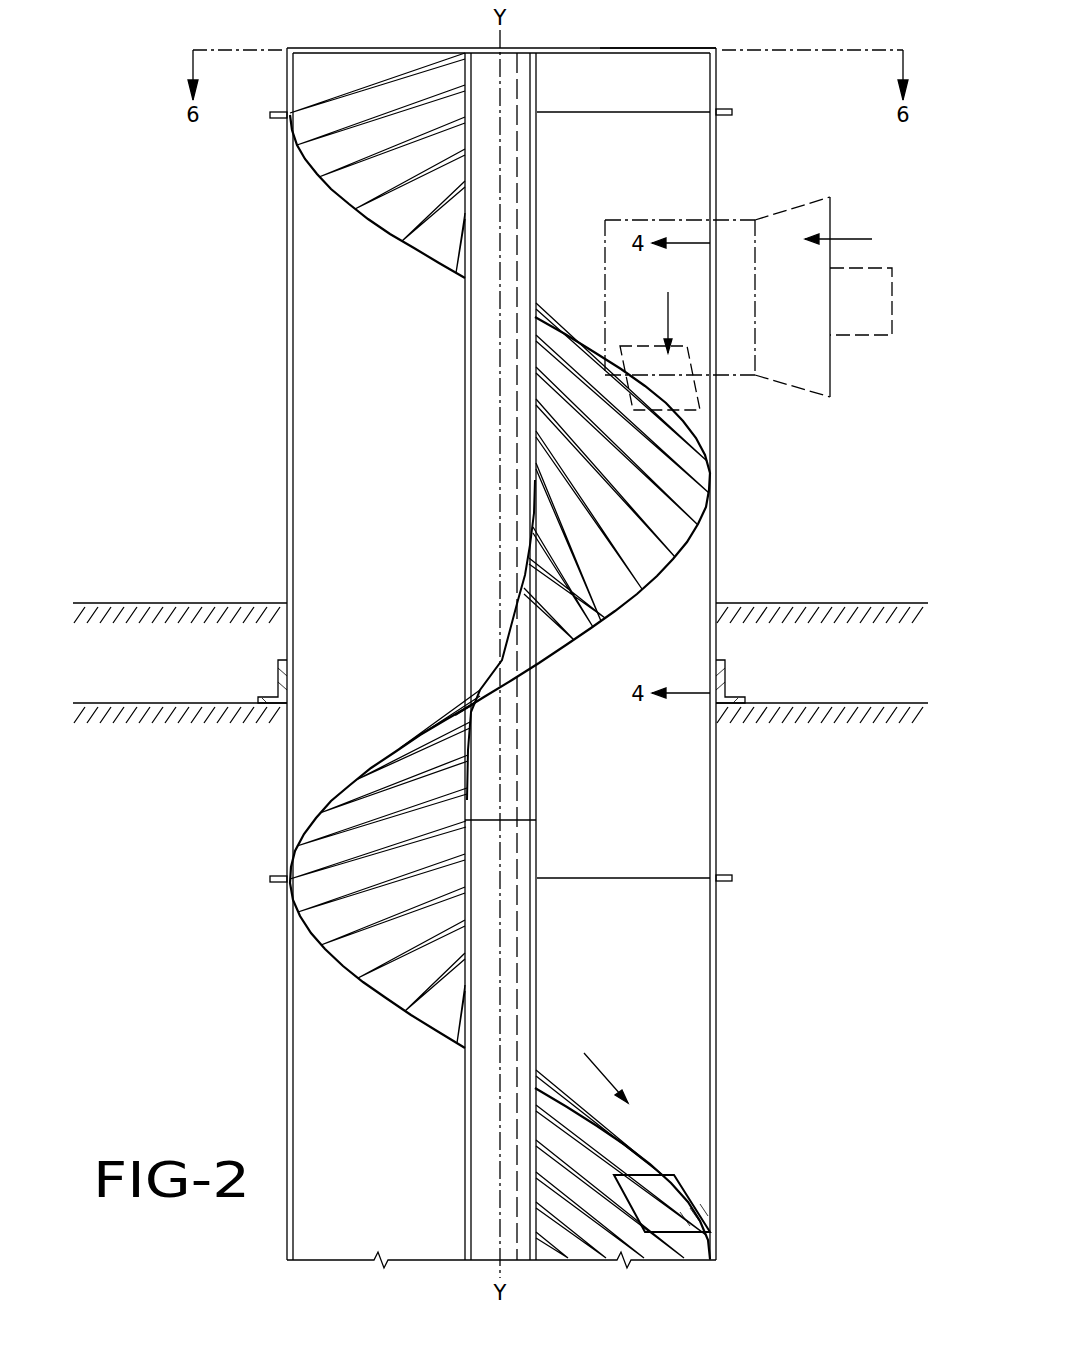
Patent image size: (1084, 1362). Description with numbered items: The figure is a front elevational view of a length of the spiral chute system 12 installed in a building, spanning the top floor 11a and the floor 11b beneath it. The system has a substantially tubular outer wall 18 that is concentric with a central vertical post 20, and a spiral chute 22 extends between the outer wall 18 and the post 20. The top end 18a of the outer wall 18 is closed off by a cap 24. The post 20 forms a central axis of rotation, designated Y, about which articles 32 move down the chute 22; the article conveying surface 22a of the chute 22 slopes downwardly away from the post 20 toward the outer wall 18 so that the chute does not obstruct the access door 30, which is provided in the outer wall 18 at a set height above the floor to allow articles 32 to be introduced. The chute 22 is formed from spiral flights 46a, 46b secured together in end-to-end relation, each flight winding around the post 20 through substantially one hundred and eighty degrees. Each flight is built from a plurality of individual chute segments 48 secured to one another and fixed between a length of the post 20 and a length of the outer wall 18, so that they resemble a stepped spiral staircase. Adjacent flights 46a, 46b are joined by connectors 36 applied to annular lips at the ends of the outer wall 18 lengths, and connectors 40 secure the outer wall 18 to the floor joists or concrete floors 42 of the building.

The top floor 11a is at (216, 459).
The floor 11b is at (218, 937).
The spiral chute system 12 is at (735, 780).
The outer wall 18 is at (720, 1038).
The top end 18a is at (618, 46).
The central vertical post 20 is at (542, 971).
The spiral chute 22 is at (368, 996).
The article conveying surface 22a is at (648, 518).
The cap 24 is at (358, 47).
The access door 30 is at (772, 212).
The articles 32 is at (636, 343).
The connectors 36 is at (282, 119).
The connectors 40 is at (279, 676).
The concrete floors 42 is at (852, 614).
The spiral flight 46a is at (338, 339).
The spiral flight 46b is at (338, 1113).
The chute segments 48 is at (344, 184).